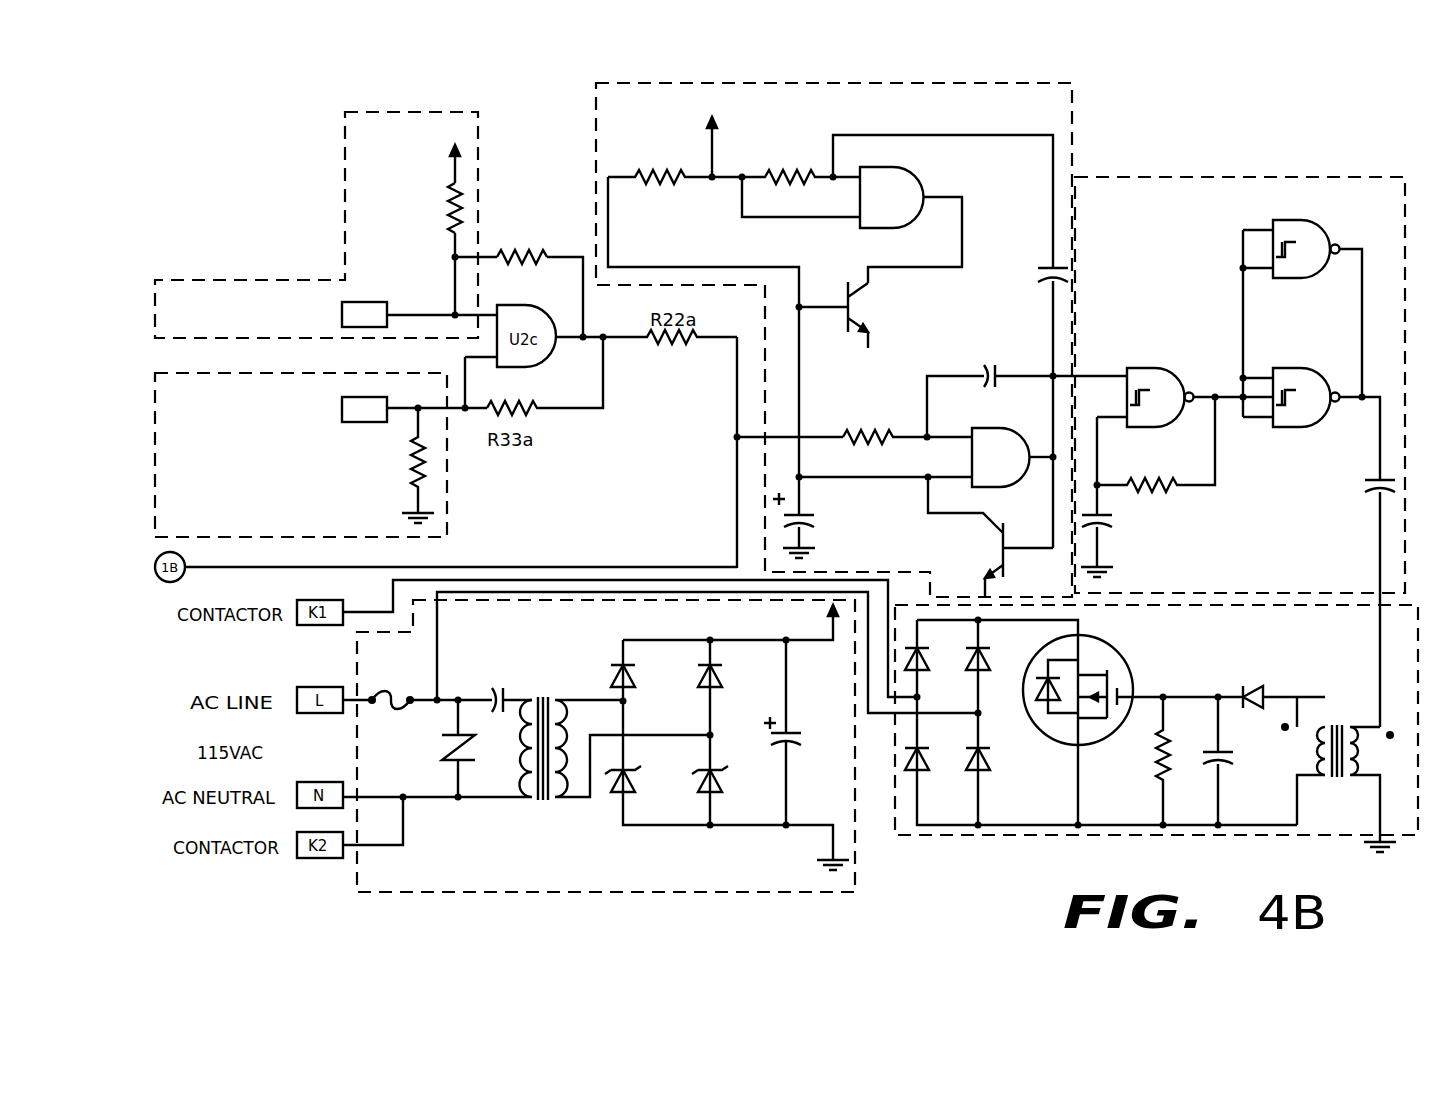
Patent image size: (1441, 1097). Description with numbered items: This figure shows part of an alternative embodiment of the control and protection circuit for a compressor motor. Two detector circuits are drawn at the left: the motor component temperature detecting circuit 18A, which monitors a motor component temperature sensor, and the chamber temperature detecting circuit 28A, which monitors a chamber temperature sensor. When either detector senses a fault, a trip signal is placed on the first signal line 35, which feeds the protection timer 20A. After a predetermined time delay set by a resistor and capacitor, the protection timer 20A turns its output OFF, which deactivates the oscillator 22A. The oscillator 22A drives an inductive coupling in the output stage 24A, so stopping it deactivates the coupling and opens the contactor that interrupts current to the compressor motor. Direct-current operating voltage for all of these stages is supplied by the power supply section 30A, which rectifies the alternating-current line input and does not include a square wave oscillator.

The motor component temperature detecting circuit 18A is at (345, 118).
The chamber temperature detecting circuit 28A is at (153, 377).
The protection timer 20A is at (1072, 93).
The oscillator 22A is at (1407, 177).
The output driver circuit 24A is at (1418, 607).
The power supply circuit 30A is at (855, 892).
The first signal line 35 is at (737, 463).